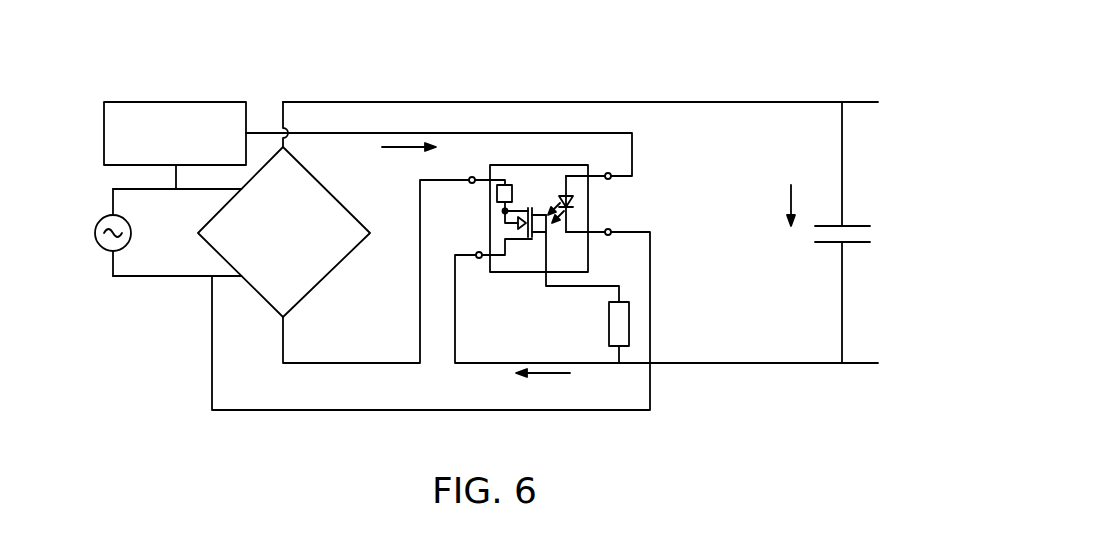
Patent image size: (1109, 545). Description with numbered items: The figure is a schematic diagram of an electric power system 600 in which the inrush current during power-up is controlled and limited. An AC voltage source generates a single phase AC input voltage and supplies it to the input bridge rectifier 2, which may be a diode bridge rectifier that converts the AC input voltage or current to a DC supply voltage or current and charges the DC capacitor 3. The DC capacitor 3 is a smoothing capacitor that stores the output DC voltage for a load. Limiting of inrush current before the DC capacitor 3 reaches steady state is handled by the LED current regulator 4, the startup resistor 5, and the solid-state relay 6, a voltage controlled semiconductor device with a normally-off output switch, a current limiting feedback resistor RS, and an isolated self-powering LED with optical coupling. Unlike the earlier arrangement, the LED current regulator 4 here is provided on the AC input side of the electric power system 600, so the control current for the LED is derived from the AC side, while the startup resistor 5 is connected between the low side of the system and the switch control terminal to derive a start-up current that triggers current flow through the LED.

The electric power system 600 is at (741, 81).
The LED current regulator 4 is at (174, 102).
The input bridge rectifier 2 is at (333, 193).
The solid-state relay 6 is at (589, 201).
The startup resistor 5 is at (609, 327).
The DC capacitor 3 is at (854, 226).